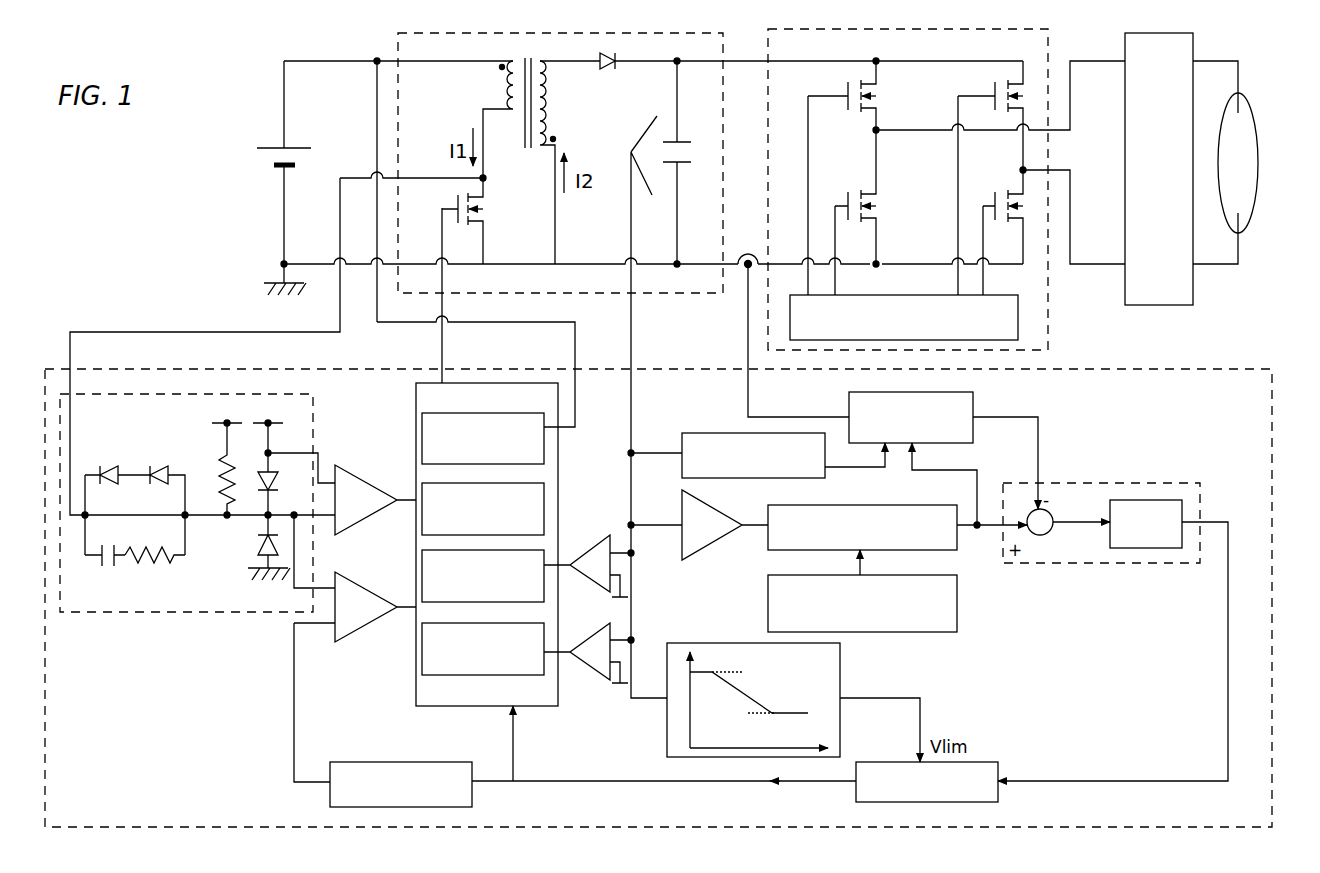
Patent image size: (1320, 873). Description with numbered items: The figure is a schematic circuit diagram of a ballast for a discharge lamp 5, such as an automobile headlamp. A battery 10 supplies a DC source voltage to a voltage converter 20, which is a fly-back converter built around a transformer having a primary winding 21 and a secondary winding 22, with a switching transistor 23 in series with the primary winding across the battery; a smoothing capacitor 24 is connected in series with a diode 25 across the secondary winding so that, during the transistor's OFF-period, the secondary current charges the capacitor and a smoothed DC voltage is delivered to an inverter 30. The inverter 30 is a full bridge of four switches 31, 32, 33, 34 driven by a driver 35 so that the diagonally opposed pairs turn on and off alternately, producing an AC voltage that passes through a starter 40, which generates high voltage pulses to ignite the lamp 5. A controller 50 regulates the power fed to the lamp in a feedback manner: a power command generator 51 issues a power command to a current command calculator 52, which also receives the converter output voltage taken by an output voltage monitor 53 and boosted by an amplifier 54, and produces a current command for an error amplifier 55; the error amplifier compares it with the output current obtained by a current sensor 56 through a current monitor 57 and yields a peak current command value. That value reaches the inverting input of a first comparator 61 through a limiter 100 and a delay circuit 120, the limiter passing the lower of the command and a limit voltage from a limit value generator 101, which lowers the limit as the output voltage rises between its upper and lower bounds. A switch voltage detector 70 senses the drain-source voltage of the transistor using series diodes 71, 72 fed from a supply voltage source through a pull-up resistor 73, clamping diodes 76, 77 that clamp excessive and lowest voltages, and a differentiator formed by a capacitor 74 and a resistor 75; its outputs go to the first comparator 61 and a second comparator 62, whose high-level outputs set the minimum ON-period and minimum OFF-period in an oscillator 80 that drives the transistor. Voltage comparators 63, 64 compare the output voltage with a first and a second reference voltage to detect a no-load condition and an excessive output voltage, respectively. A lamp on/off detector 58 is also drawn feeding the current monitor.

The discharge lamp 5 is at (1255, 125).
The battery 10 is at (262, 153).
The voltage converter 20 is at (395, 36).
The primary winding 21 is at (499, 83).
The secondary winding 22 is at (553, 93).
The switching element or transistor 23 is at (490, 213).
The smoothing capacitor 24 is at (693, 152).
The diode 25 is at (606, 76).
The inverter 30 is at (769, 36).
The switch 31 is at (879, 88).
The switch 32 is at (879, 205).
The switch 33 is at (1000, 84).
The switch 34 is at (1003, 186).
The driver 35 is at (904, 317).
The starter 40 is at (1159, 169).
The controller 50 is at (1190, 367).
The power command generator 51 is at (862, 603).
The current command calculator 52 is at (862, 529).
The output voltage monitor 53 is at (652, 177).
The amplifier 54 is at (725, 525).
The error amplifier 55 is at (1140, 483).
The current sensor 56 is at (740, 278).
The current monitor 57 is at (911, 417).
The lamp on/off detector 58 is at (753, 456).
The first comparator 61 is at (362, 635).
The second comparator 62 is at (365, 472).
The voltage comparator 63 is at (585, 636).
The voltage comparator 64 is at (585, 548).
The switch voltage detector 70 is at (310, 394).
The diode 71 is at (108, 465).
The diode 72 is at (153, 465).
The pull-up resistor 73 is at (215, 487).
The capacitor 74 is at (108, 572).
The resistor 75 is at (143, 572).
The clamping diode 76 is at (297, 487).
The clamping diode 77 is at (253, 547).
The oscillator 80 is at (487, 544).
The limiter 100 is at (983, 762).
The limit value generator 101 is at (841, 672).
The delay circuit 120 is at (380, 762).